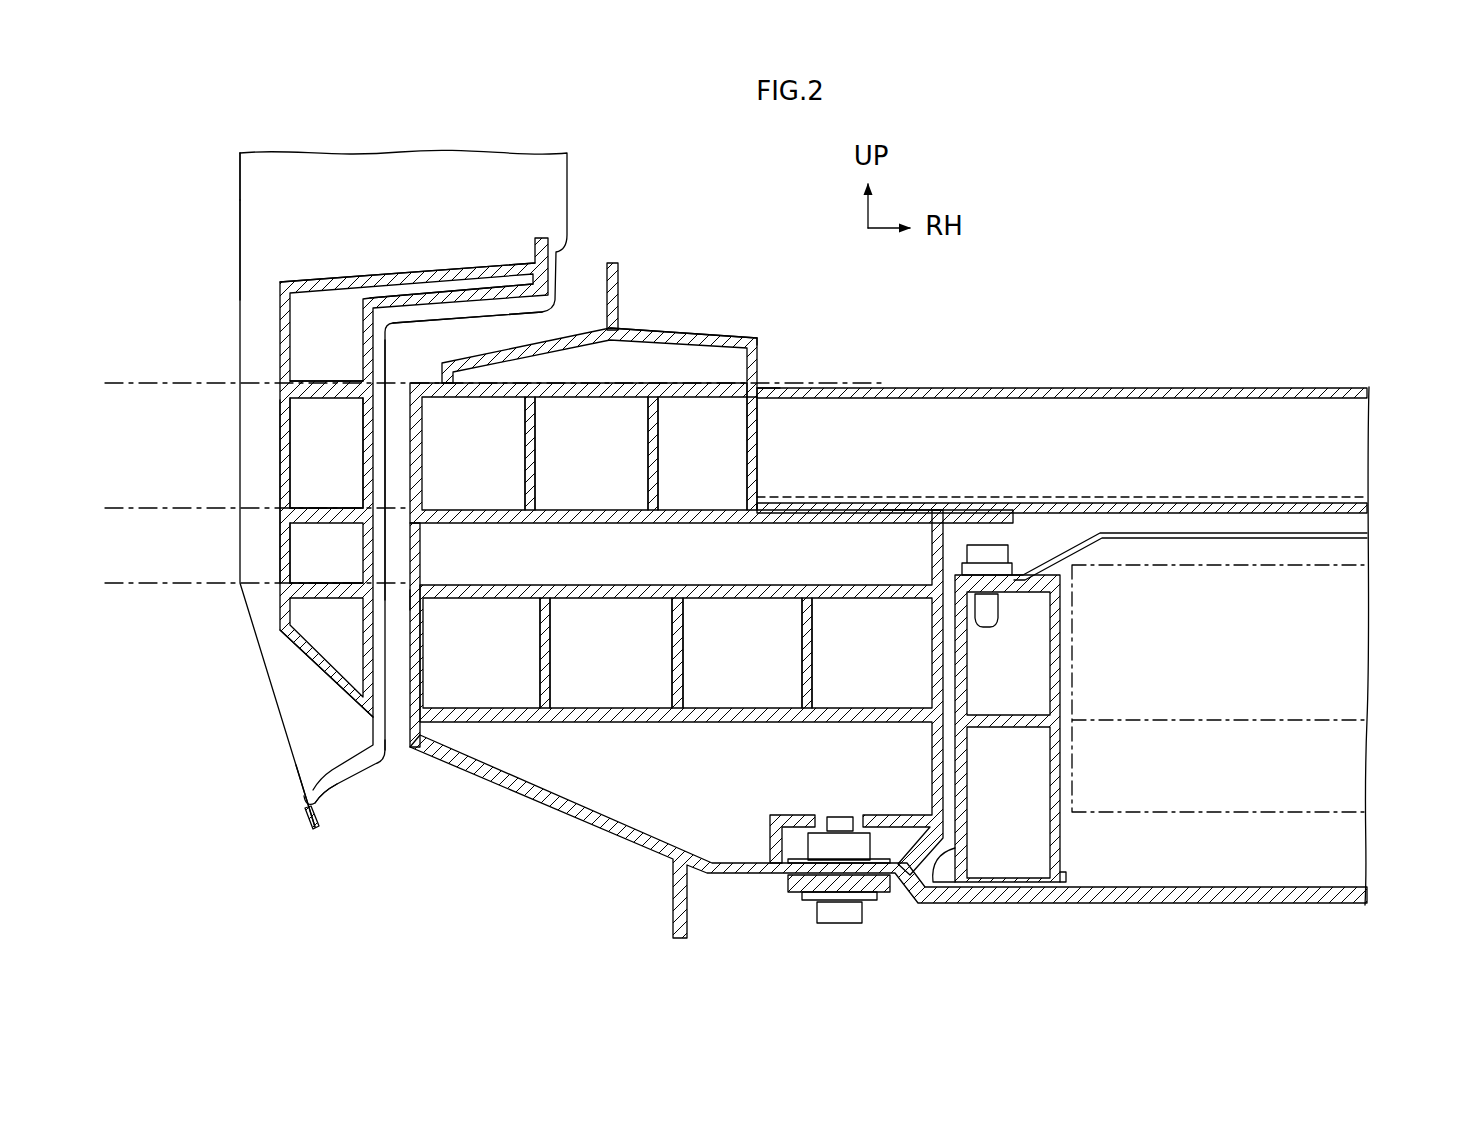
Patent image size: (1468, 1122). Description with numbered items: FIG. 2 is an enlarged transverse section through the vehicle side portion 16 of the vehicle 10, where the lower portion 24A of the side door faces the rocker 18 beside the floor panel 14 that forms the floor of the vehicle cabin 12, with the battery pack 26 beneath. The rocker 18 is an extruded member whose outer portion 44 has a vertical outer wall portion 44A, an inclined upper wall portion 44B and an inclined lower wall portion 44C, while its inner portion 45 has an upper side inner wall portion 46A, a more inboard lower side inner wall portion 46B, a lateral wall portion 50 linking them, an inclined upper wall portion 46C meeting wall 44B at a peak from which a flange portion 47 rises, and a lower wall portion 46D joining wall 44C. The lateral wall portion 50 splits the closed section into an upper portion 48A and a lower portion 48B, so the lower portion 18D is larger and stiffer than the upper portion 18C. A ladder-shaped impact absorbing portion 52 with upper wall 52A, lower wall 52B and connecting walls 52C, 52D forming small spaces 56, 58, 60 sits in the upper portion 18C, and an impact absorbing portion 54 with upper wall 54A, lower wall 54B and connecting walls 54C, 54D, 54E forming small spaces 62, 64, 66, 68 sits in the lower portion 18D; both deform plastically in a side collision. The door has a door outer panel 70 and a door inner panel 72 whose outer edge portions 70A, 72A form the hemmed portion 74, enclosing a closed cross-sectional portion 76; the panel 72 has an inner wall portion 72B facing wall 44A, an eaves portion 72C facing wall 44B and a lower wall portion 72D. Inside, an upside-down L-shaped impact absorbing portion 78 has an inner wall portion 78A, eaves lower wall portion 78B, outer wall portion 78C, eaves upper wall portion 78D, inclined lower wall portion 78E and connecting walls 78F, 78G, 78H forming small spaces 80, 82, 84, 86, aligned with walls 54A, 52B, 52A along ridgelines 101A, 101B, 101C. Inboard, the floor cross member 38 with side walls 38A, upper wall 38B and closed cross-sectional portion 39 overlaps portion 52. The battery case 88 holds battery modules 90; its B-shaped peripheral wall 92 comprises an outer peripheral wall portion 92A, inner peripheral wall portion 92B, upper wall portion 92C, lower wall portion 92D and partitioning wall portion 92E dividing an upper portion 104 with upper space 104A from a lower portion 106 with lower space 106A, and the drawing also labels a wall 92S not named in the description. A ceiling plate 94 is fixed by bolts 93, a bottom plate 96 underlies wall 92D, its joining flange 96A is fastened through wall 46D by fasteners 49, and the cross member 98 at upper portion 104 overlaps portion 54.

The vehicle 10 is at (765, 226).
The vehicle cabin 12 is at (995, 285).
The floor panel 14 is at (1312, 497).
The vehicle side portion 16 is at (183, 158).
The rocker 18 is at (580, 832).
The upper portion of rocker 18C is at (765, 468).
The lower portion of rocker 18D is at (900, 510).
The lower portion of side door 24A is at (228, 247).
The battery pack 26 is at (1378, 713).
The floor cross member 38 is at (1172, 390).
The side walls 38A is at (1330, 410).
The upper wall 38B is at (1245, 390).
The closed cross-sectional portion 39 is at (1124, 463).
The outer portion 44 is at (404, 471).
The outer wall portion 44A is at (408, 600).
The inclined upper wall portion 44B is at (540, 352).
The inclined lower wall portion 44C is at (522, 790).
The inner portion 45 is at (617, 345).
The upper side inner wall portion 46A is at (758, 360).
The lower side inner wall portion 46B is at (957, 517).
The inclined upper wall portion 46C is at (700, 335).
The lower wall portion 46D is at (742, 878).
The flange portion 47 is at (622, 270).
The upper portion of closed cross-sectional portion 48A is at (545, 501).
The lower portion of closed cross-sectional portion 48B is at (628, 791).
The fasteners 49 is at (838, 912).
The lateral wall portion 50 is at (913, 508).
The impact absorbing portion 52 is at (602, 530).
The upper wall 52A is at (702, 453).
The lower wall 52B is at (676, 554).
The connecting wall 52C is at (526, 466).
The connecting wall 52D is at (650, 420).
The impact absorbing portion 54 is at (799, 727).
The upper wall 54A is at (862, 588).
The lower wall 54B is at (850, 722).
The connecting wall 54C is at (540, 668).
The connecting wall 54D is at (672, 668).
The connecting wall 54E is at (802, 665).
The small space 56 is at (454, 433).
The small space 58 is at (552, 453).
The small space 60 is at (691, 483).
The small space 62 is at (466, 635).
The small space 64 is at (598, 635).
The small space 66 is at (728, 635).
The small space 68 is at (854, 658).
The door outer panel 70 is at (228, 283).
The outer edge portion 70A is at (304, 793).
The door inner panel 72 is at (420, 502).
The outer edge portion 72A is at (325, 776).
The inner wall portion 72B is at (392, 365).
The eaves portion 72C is at (500, 318).
The lower wall portion 72D is at (365, 770).
The hemmed portion 74 is at (308, 822).
The closed cross-sectional portion 76 is at (336, 238).
The impact absorbing portion 78 is at (274, 370).
The inner wall portion 78A is at (362, 414).
The eaves lower wall portion 78B is at (470, 290).
The outer wall portion 78C is at (281, 478).
The eaves upper wall portion 78D is at (420, 272).
The inclined lower wall portion 78E is at (325, 665).
The connecting wall 78F is at (318, 583).
The connecting wall 78G is at (318, 510).
The connecting wall 78H is at (322, 381).
The small space 80 is at (330, 630).
The small space 82 is at (302, 533).
The small space 84 is at (298, 438).
The small space 86 is at (336, 331).
The battery case 88 is at (1184, 912).
The battery modules 90 is at (1275, 790).
The peripheral wall 92 is at (1027, 714).
The outer peripheral wall portion 92A is at (945, 850).
The inner peripheral wall portion 92B is at (1058, 790).
The upper wall portion 92C is at (1035, 597).
The lower wall portion 92D is at (1027, 877).
The partitioning wall portion 92E is at (1013, 718).
The frame member side wall 92S is at (1014, 898).
The bolts 93 is at (987, 553).
The ceiling plate 94 is at (1327, 535).
The bottom plate 96 is at (1100, 905).
The joining flange 96A is at (880, 885).
The cross member 98 is at (1325, 667).
The ridgeline 101A is at (150, 383).
The ridgeline 101B is at (150, 508).
The ridgeline 101C is at (150, 583).
The upper portion 104 is at (1056, 655).
The upper space 104A is at (978, 678).
The lower portion 106 is at (1058, 750).
The lower space 106A is at (978, 823).